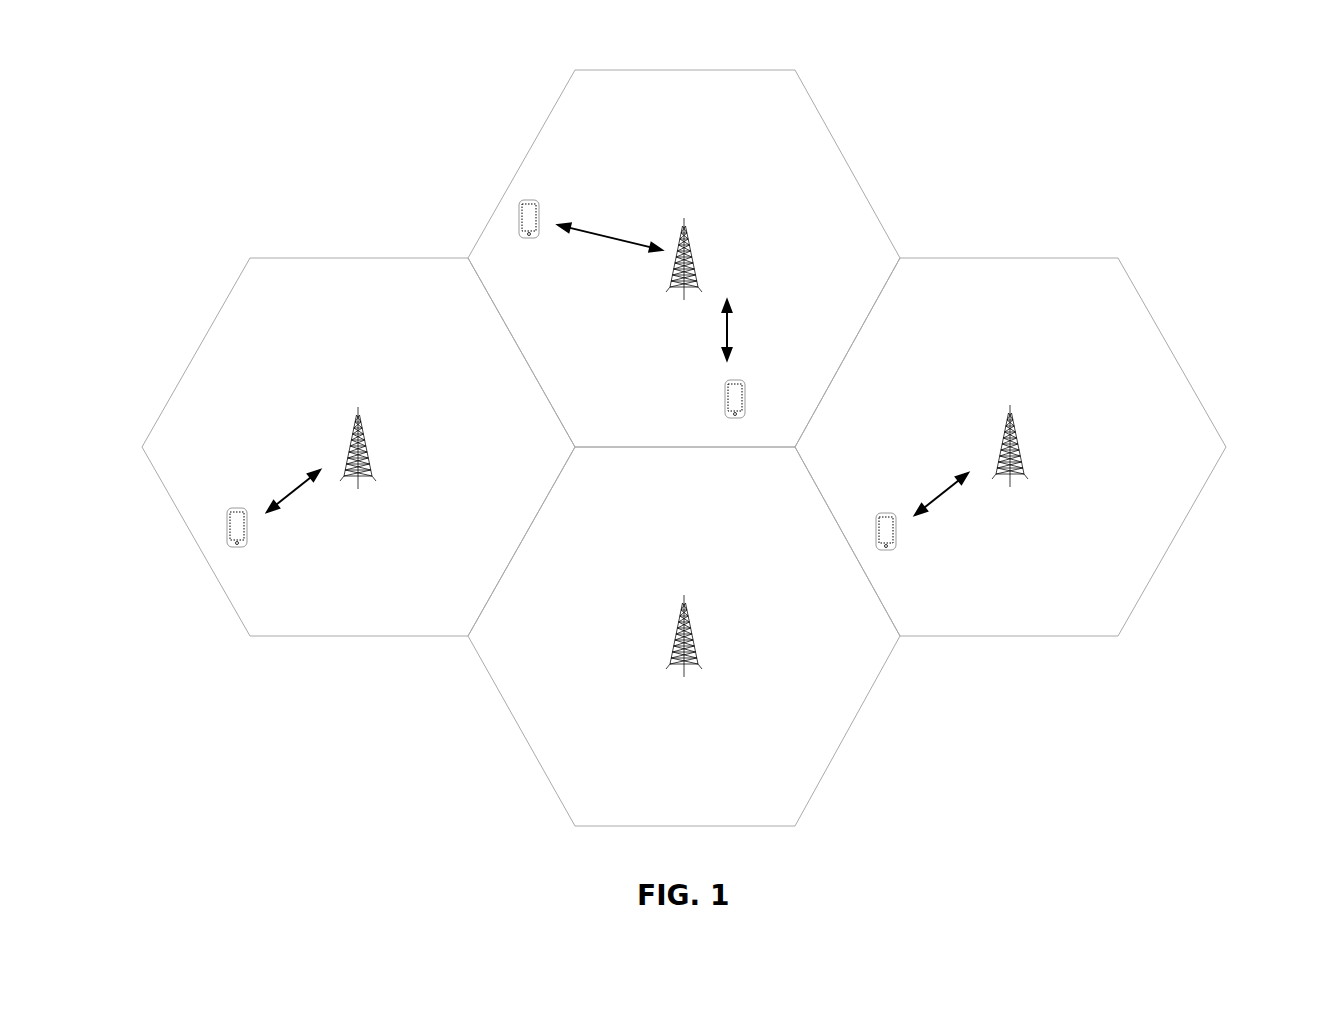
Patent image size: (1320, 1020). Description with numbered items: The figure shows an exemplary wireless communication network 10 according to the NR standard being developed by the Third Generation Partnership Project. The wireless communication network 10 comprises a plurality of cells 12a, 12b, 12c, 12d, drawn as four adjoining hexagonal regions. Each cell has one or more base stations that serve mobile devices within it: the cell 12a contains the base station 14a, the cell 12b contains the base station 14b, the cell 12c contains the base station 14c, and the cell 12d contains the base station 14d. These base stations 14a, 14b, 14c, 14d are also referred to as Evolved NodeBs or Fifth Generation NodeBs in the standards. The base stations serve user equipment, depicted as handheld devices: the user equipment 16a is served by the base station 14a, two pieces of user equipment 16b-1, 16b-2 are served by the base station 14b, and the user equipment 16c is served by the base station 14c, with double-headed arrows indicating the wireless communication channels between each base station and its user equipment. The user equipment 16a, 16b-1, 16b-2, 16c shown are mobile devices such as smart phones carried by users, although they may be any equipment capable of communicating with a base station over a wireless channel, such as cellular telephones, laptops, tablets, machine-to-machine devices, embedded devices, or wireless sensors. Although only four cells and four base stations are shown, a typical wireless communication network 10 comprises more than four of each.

The wireless communication network 10 is at (1168, 66).
The cell 12a is at (1078, 258).
The cell 12b is at (843, 157).
The cell 12c is at (350, 259).
The cell 12d is at (512, 717).
The base station 14a is at (1015, 440).
The base station 14b is at (688, 250).
The base station 14c is at (362, 437).
The base station 14d is at (690, 630).
The user equipment 16a is at (895, 533).
The user equipment 16b-1 is at (747, 387).
The user equipment 16b-2 is at (519, 219).
The user equipment 16c is at (226, 535).